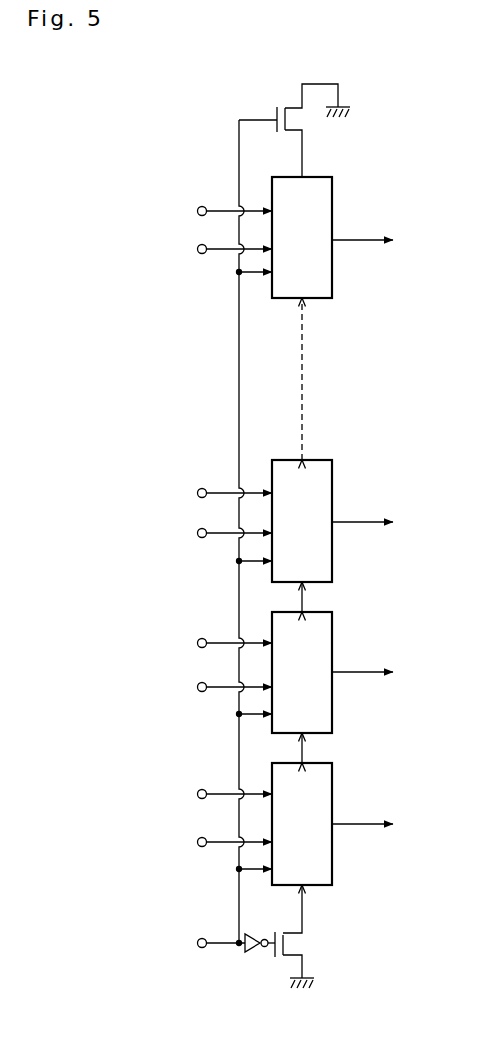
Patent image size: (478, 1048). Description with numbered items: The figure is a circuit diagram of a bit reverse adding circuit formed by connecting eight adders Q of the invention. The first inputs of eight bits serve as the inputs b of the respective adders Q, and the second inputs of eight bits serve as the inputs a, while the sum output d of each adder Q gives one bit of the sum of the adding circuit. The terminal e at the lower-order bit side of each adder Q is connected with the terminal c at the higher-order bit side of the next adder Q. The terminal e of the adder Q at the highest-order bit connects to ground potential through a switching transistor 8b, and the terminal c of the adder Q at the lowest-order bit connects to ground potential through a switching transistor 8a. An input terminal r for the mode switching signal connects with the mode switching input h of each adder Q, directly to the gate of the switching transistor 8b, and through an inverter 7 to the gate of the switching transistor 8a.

The inverter 7 is at (243, 951).
The switching transistor 8a is at (300, 943).
The switching transistor 8b is at (297, 93).
The adder Q is at (354, 178).